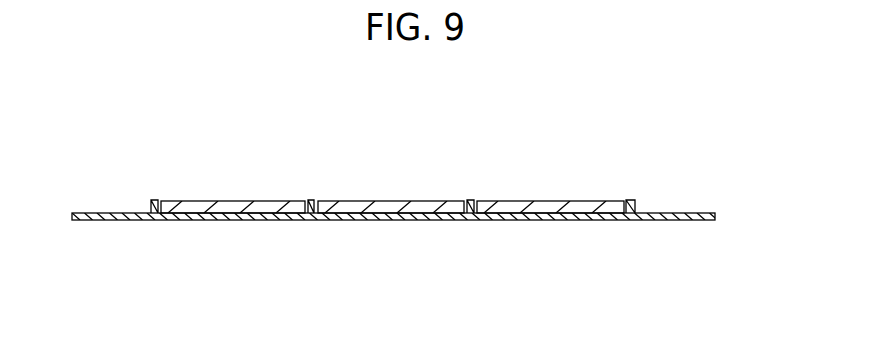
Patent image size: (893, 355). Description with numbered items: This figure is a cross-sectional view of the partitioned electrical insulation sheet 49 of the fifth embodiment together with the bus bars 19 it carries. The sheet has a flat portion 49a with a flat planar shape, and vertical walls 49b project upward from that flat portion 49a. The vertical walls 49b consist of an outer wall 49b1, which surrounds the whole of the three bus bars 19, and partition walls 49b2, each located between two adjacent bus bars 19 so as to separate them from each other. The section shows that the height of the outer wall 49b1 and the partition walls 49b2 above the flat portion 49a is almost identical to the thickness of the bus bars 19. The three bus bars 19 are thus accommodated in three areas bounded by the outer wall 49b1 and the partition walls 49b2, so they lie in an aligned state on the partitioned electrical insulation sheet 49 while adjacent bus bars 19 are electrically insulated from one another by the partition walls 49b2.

The bus bar 19 is at (233, 206).
The partitioned electrical insulation sheet 49 is at (395, 222).
The flat portion 49a is at (658, 221).
The vertical walls 49b is at (667, 169).
The outer wall 49b1 is at (630, 206).
The partition walls 49b2 is at (313, 200).